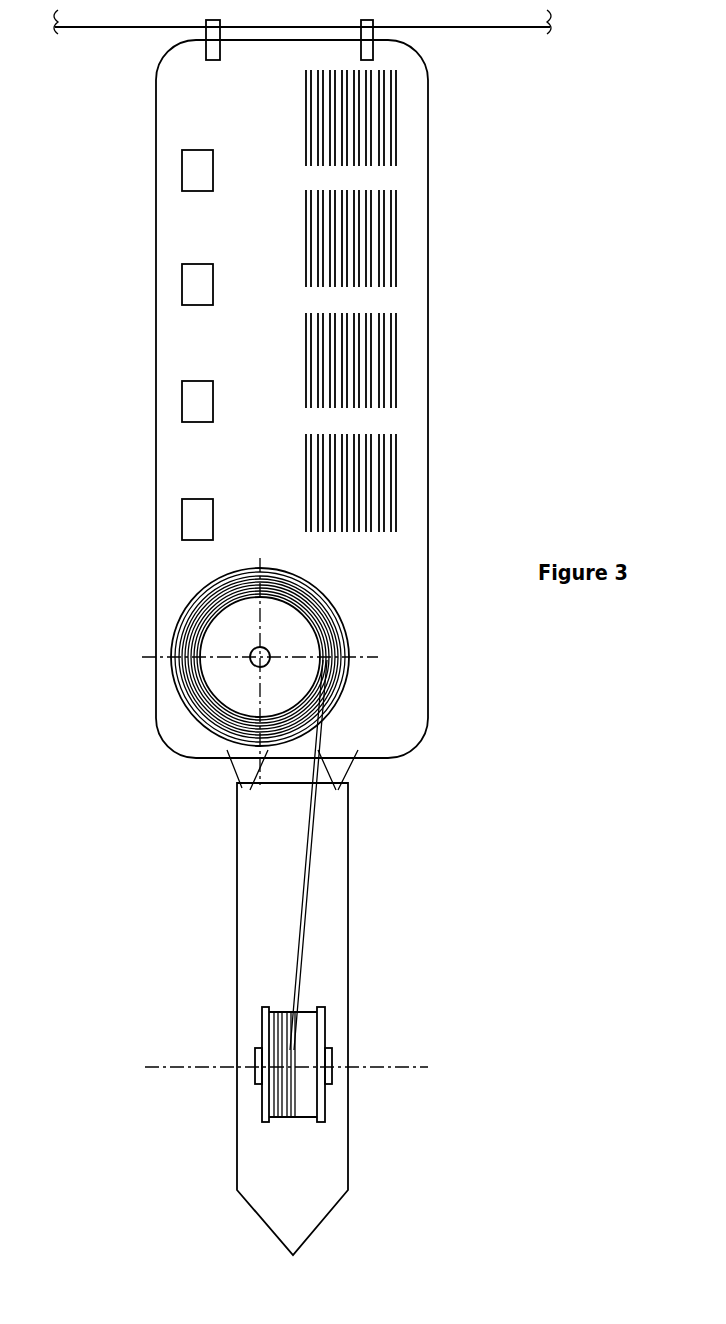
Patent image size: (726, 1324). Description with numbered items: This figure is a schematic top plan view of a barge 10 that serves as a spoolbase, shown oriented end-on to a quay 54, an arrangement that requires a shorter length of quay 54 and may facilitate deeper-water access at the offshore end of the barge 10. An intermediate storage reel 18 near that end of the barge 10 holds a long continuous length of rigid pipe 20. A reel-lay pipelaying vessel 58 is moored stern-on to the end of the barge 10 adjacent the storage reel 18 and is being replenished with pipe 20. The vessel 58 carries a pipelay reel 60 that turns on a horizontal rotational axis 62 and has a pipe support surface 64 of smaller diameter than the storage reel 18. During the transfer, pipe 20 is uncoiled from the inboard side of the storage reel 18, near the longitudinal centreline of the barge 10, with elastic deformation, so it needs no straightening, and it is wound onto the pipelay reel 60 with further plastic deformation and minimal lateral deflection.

The barge 10 is at (120, 344).
The intermediate storage reel 18 is at (238, 638).
The rigid pipe 20 is at (305, 878).
The quay 54 is at (477, 27).
The reel-lay pipelaying vessel 58 is at (260, 922).
The pipelay reel 60 is at (308, 1040).
The horizontal rotational axis 62 is at (407, 1070).
The pipe support surface 64 is at (305, 1118).